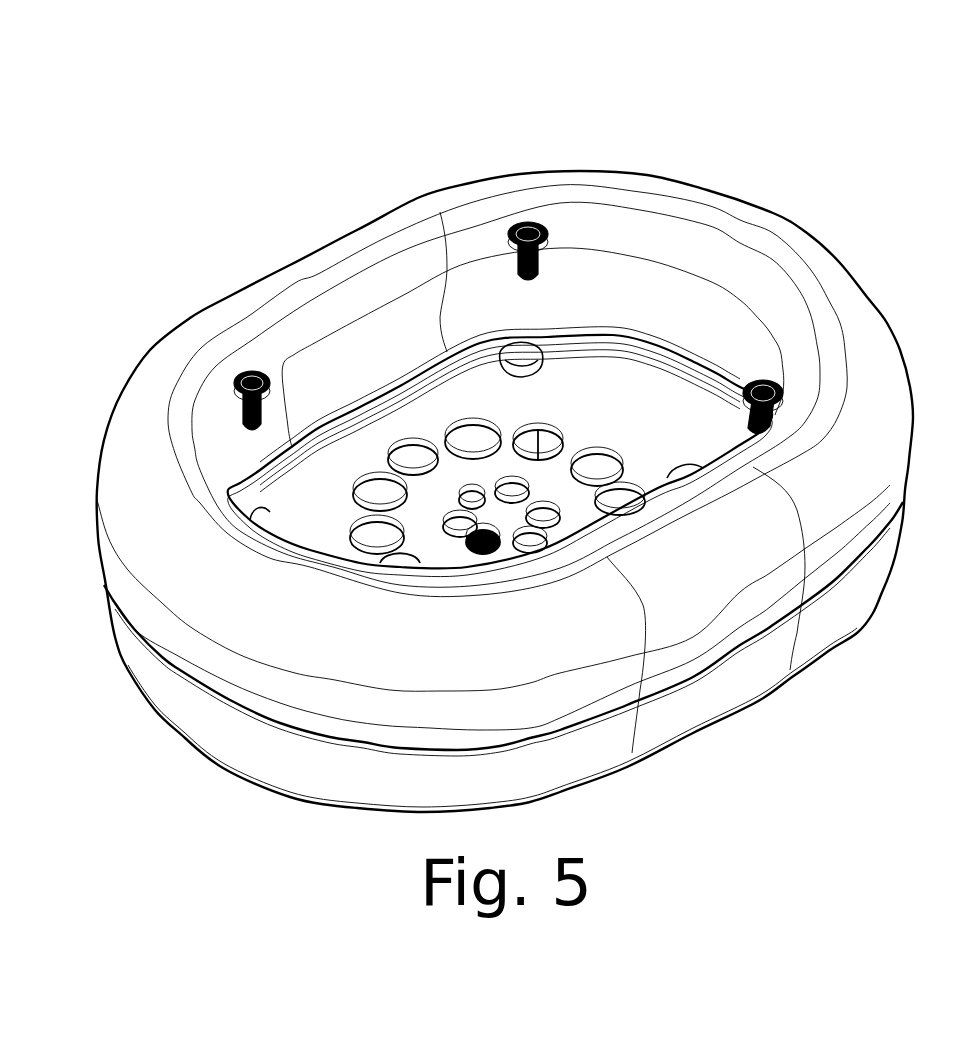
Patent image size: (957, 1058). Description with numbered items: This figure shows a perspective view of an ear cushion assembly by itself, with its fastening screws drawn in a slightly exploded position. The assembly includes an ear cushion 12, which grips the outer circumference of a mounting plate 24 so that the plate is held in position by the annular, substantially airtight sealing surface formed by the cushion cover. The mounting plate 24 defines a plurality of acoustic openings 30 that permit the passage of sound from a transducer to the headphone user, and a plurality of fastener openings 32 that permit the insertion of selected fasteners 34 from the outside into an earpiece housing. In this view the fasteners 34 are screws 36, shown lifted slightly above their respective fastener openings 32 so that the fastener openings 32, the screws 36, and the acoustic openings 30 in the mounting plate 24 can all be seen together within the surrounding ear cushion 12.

The ear cushion 12 is at (737, 579).
The mounting plate 24 is at (343, 470).
The acoustic openings 30 is at (596, 470).
The fastener openings 32 is at (610, 340).
The fasteners 34 is at (548, 158).
The screws 36 is at (440, 212).